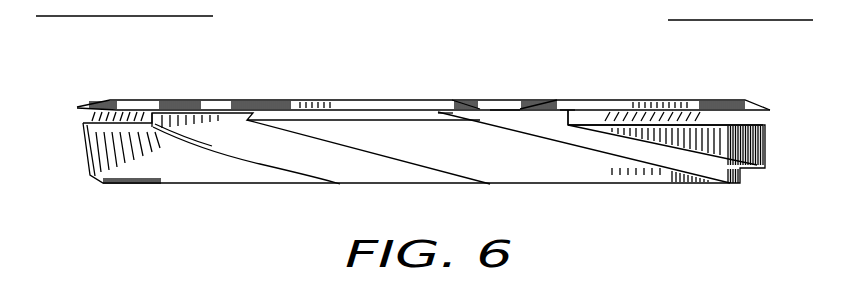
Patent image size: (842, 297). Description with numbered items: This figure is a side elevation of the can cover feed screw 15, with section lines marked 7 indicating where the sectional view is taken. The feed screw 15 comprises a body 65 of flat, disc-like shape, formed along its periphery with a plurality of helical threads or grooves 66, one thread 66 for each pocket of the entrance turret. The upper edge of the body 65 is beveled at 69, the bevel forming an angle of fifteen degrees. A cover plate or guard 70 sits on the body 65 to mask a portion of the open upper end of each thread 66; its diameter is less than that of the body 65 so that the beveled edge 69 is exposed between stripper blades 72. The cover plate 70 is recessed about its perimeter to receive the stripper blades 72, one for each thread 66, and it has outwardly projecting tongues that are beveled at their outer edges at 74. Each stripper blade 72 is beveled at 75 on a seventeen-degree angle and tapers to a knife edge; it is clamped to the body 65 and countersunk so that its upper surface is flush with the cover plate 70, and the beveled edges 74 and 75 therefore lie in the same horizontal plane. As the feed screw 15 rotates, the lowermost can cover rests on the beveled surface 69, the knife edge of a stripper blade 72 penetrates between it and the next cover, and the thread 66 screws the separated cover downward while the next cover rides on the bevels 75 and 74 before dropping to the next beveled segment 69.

The section line 7- 7 is at (53, 5).
The feed screw 15 is at (646, 84).
The body 65 is at (726, 186).
The helical threads 66 is at (325, 176).
The beveled edge 69 is at (418, 120).
The cover plate 70 is at (558, 91).
The stripper blade 72 is at (485, 95).
The beveled outer edge 74 is at (572, 107).
The bevel of stripper blade 75 is at (502, 107).